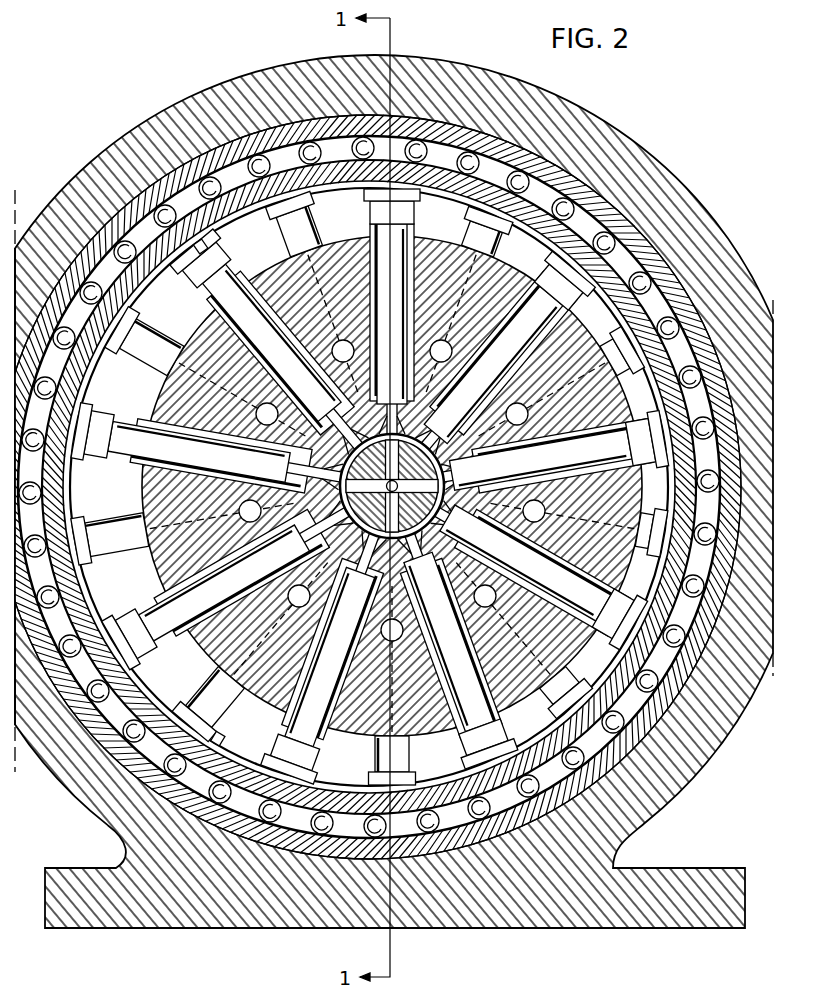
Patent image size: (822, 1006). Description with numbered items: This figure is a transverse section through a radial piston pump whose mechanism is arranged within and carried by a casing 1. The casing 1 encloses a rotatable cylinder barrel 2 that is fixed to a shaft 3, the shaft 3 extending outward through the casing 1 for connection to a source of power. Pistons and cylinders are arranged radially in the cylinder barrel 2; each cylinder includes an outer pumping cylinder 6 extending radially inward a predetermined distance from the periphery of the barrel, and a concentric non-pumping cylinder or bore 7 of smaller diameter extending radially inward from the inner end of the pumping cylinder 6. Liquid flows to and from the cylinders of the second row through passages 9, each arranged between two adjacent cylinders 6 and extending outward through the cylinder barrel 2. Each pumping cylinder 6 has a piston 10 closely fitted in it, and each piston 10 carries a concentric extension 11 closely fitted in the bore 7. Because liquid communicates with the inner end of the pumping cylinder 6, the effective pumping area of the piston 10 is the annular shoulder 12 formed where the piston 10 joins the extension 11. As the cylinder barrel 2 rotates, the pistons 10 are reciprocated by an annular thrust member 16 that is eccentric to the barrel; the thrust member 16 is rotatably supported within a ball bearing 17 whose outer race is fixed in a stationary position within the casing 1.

The casing 1 is at (578, 128).
The cylinder barrel 2 is at (174, 404).
The shaft 3 is at (392, 486).
The pumping cylinder 6 is at (238, 342).
The non-pumping cylinder or bore 7 is at (383, 485).
The passage 9 is at (392, 493).
The piston 10 is at (535, 717).
The extension 11 is at (370, 485).
The annular shoulder 12 is at (404, 482).
The annular thrust member 16 is at (205, 241).
The ball bearing 17 is at (582, 191).